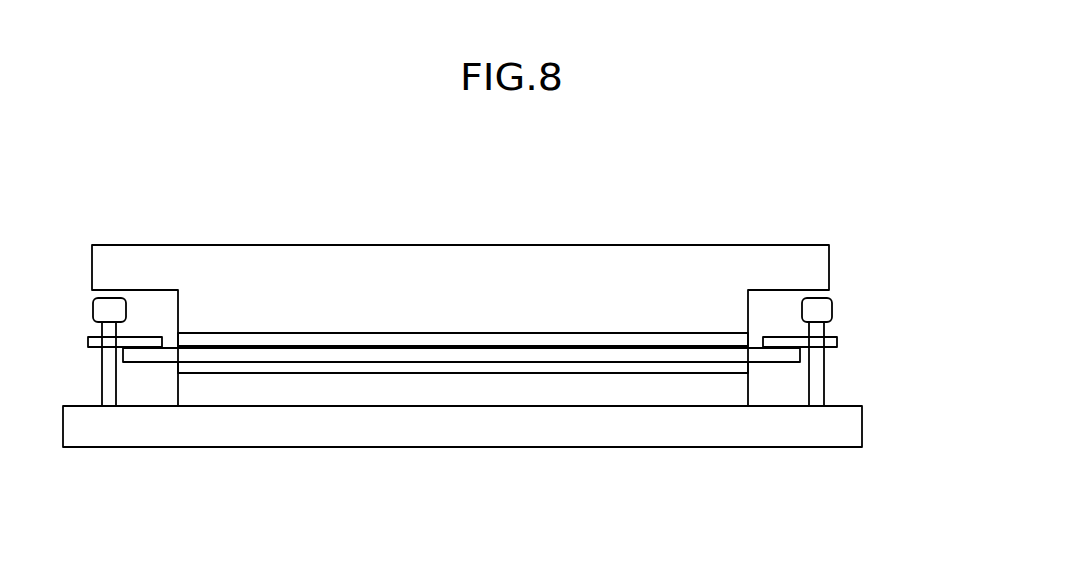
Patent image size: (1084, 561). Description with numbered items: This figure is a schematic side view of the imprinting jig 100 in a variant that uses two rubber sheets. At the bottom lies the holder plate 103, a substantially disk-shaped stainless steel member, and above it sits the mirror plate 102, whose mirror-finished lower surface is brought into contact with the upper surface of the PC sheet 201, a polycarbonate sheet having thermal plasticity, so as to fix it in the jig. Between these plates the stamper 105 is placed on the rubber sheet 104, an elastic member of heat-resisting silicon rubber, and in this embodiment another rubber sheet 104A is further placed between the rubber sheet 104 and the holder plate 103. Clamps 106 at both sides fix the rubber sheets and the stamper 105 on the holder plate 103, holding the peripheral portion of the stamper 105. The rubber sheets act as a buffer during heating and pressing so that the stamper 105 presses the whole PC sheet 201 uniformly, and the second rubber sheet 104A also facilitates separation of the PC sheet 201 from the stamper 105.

The imprinting jig 100 is at (748, 217).
The mirror plate 102 is at (583, 265).
The holder plate 103 is at (595, 422).
The rubber sheet 104 is at (680, 390).
The rubber sheet 104A is at (187, 367).
The stamper 105 is at (727, 365).
The clamp 106 is at (823, 305).
The plastic sheet having thermal plasticity (PC sheet) 201 is at (730, 338).